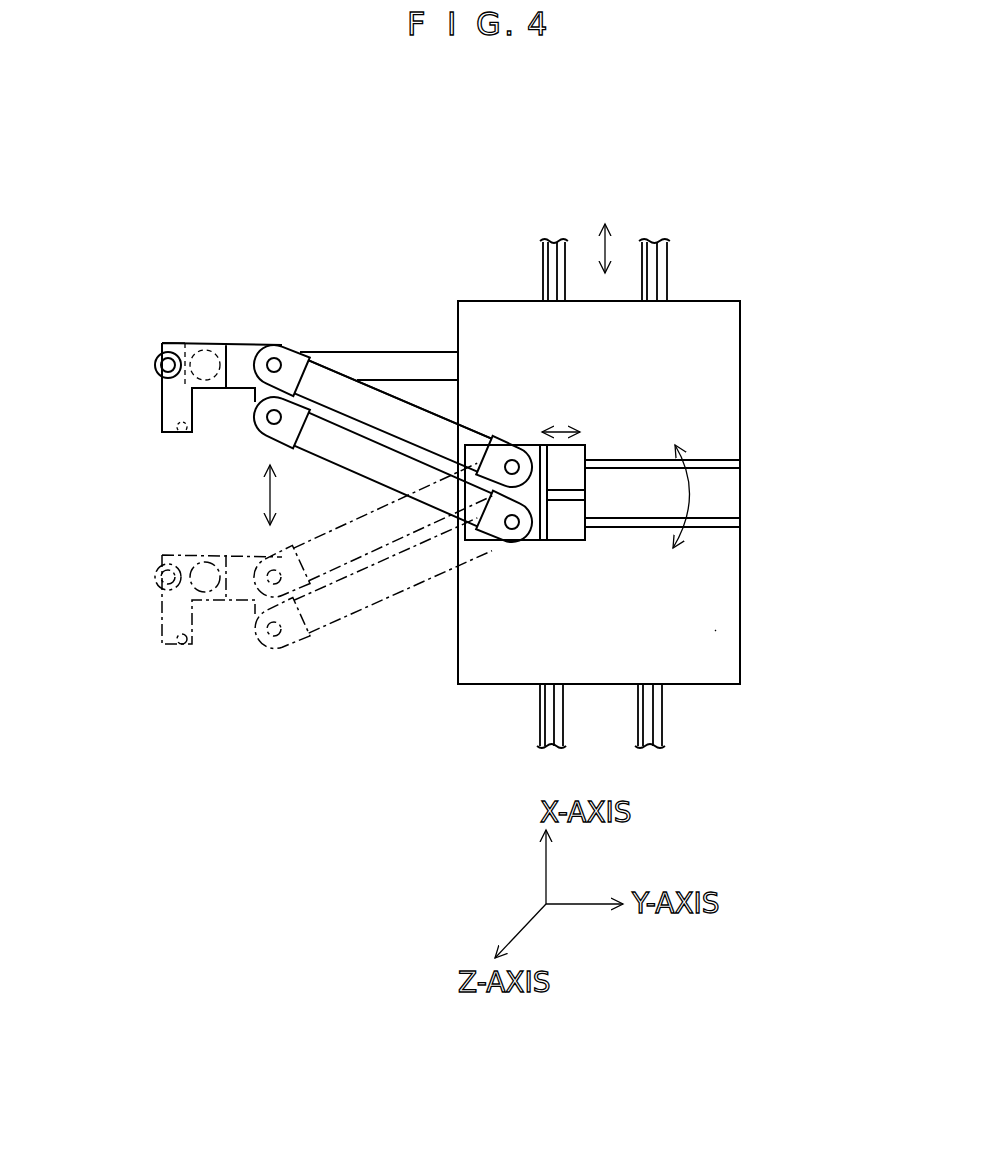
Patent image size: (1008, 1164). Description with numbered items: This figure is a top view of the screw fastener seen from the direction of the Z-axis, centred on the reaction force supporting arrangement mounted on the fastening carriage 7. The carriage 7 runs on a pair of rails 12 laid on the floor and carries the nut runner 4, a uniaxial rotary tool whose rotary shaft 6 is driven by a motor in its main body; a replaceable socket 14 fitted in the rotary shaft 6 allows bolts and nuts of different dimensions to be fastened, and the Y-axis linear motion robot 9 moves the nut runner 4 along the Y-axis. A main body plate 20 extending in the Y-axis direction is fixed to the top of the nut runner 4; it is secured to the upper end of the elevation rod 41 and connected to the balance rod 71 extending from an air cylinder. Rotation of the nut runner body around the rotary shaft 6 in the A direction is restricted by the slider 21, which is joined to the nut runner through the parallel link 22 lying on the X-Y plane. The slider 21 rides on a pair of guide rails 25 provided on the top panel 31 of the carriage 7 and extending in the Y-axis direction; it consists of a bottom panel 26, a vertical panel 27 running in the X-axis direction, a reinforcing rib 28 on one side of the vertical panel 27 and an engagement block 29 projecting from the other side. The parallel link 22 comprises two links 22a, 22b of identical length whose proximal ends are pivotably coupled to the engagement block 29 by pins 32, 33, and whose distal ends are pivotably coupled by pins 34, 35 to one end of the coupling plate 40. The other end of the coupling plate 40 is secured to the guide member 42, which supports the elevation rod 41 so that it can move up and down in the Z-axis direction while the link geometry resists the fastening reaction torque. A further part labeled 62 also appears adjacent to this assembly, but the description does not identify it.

The nut runner 4 is at (158, 384).
The rotary shaft 6 is at (155, 366).
The fastening carriage 7 is at (745, 340).
The Y-axis linear motion robot 9 is at (403, 350).
The rails 12 is at (550, 265).
The socket 14 is at (150, 348).
The main body plate 20 is at (164, 412).
The slider 21 is at (587, 433).
The parallel link 22 is at (424, 406).
The link 22a is at (360, 400).
The link 22b is at (325, 445).
The guide rails 25 is at (710, 463).
The bottom panel 26 is at (565, 523).
The vertical panel 27 is at (540, 540).
The reinforcing rib 28 is at (565, 490).
The engagement block 29 is at (527, 453).
The top panel 31 is at (715, 630).
The pin 32 is at (512, 453).
The pin 33 is at (512, 532).
The pin 34 is at (274, 356).
The pin 35 is at (268, 432).
The coupling plate 40 is at (240, 360).
The elevation rod 41 is at (204, 343).
The guide member 42 is at (193, 343).
The support member 62 is at (322, 358).
The balance rod 71 is at (180, 435).
The A direction A is at (692, 492).